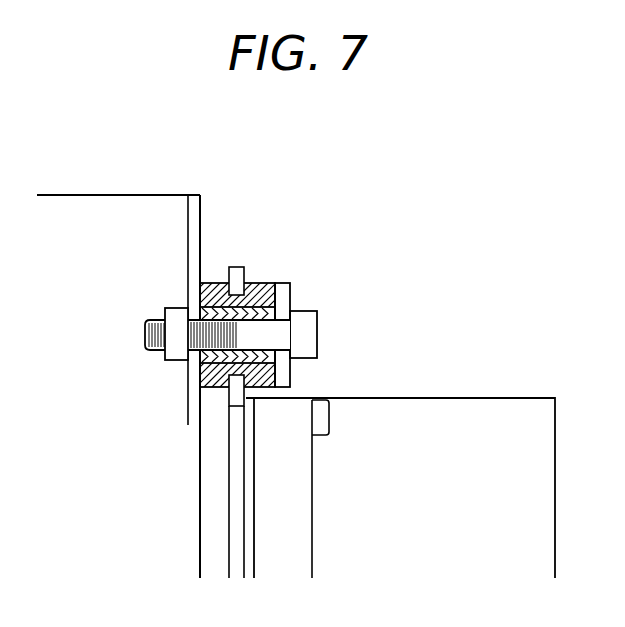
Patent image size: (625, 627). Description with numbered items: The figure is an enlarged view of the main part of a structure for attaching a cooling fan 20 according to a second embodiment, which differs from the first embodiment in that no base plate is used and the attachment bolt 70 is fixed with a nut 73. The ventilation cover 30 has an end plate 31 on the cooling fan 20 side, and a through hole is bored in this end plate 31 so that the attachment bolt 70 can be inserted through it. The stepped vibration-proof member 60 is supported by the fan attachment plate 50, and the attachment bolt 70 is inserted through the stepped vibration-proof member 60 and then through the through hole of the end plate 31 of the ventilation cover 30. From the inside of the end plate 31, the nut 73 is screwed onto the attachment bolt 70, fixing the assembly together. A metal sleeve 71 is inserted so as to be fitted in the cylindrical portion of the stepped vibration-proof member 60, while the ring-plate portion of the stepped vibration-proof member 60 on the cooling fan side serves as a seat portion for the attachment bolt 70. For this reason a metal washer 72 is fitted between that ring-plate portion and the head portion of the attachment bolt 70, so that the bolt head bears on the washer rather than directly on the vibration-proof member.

The cooling fan 20 is at (490, 418).
The ventilation cover 30 is at (113, 229).
The end plate 31 is at (188, 222).
The fan attachment plate 50 is at (240, 270).
The stepped vibration-proof member 60 is at (218, 283).
The attachment bolt 70 is at (303, 333).
The metal sleeve 71 is at (275, 295).
The metal washer 72 is at (288, 293).
The nut 73 is at (183, 310).